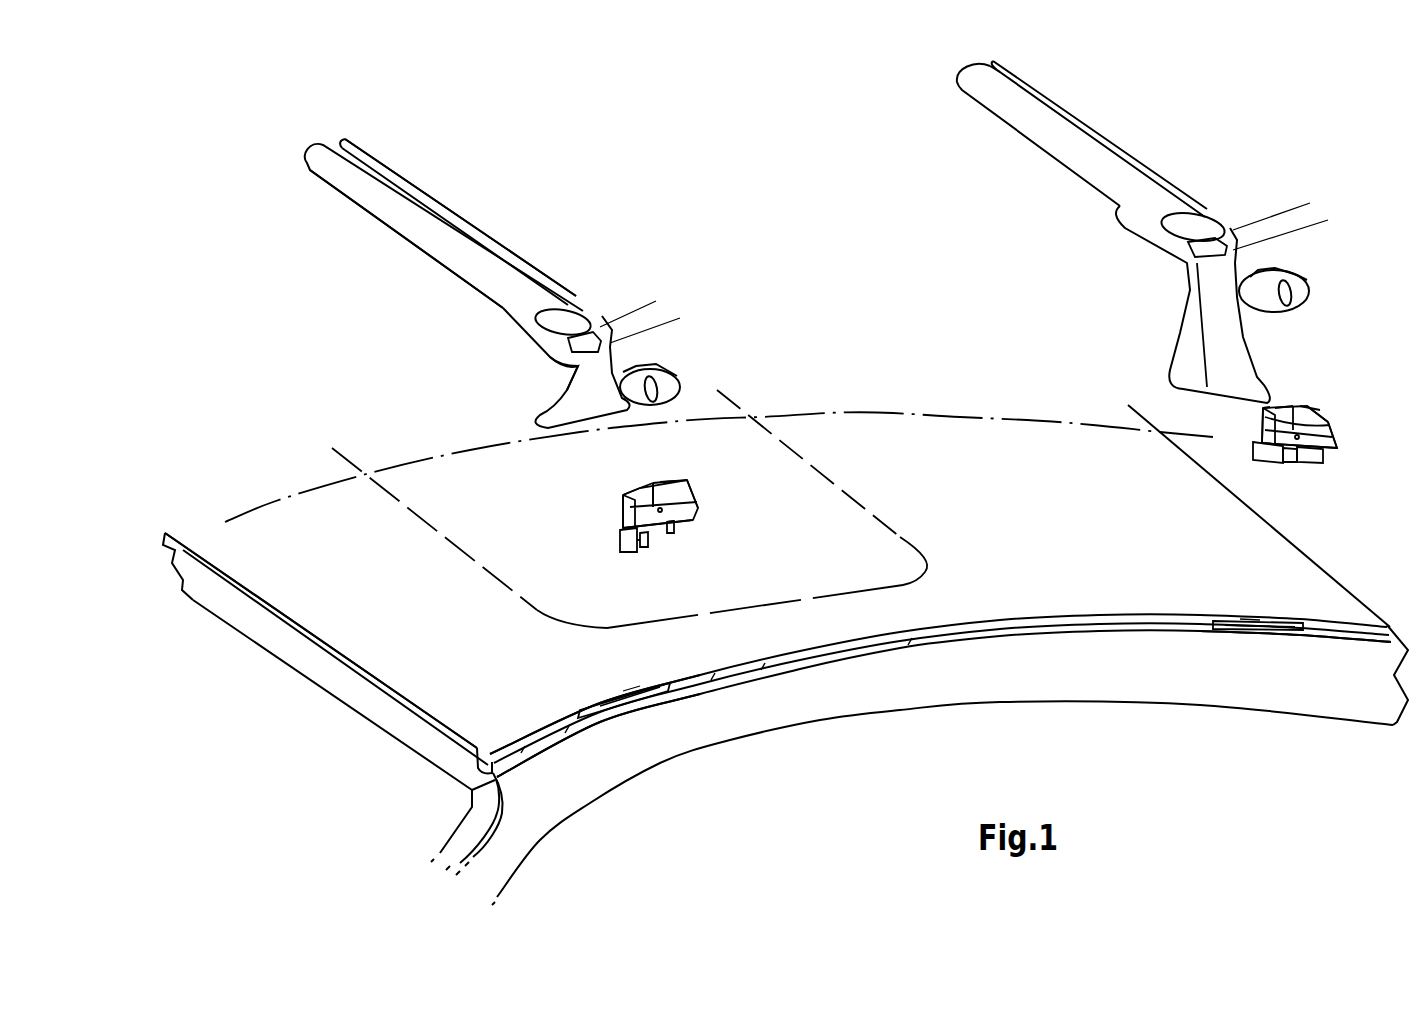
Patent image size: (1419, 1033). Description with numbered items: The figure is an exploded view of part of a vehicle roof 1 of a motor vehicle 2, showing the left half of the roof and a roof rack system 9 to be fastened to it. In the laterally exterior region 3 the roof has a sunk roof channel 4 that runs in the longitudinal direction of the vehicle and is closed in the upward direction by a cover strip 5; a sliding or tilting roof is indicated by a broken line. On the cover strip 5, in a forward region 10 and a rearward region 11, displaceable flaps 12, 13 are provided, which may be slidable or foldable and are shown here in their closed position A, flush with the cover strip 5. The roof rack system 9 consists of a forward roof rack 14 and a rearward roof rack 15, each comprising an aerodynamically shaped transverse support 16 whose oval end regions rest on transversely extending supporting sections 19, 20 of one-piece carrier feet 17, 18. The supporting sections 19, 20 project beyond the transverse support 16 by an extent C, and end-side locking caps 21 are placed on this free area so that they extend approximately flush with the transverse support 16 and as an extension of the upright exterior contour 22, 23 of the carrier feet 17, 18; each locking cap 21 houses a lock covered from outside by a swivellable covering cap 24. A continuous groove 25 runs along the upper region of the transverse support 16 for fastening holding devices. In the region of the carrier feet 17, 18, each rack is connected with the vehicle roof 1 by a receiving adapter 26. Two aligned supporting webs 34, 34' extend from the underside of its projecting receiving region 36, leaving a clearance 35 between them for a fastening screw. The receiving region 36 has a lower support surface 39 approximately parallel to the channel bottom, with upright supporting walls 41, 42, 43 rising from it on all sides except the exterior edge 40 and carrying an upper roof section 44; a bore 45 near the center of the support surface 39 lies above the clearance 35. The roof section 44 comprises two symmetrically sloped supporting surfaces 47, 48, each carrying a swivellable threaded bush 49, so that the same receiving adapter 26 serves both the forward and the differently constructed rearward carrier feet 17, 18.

The vehicle roof 1 is at (287, 520).
The motor vehicle 2 is at (229, 636).
The laterally exterior region 3 is at (500, 733).
The roof channel 4 is at (552, 737).
The cover strip 5 is at (1337, 632).
The roof rack system 9 is at (843, 236).
The forward region 10 is at (573, 690).
The rearward region 11 is at (1218, 612).
The flap 12 is at (657, 678).
The flap 13 is at (1270, 622).
The forward roof rack 14 is at (664, 193).
The rearward roof rack 15 is at (1125, 143).
The transverse support 16 is at (450, 252).
The carrier foot 17 is at (544, 336).
The carrier foot 18 is at (1187, 275).
The supporting section 19 is at (602, 326).
The supporting section 20 is at (1233, 225).
The locking cap 21 is at (1001, 319).
The upright exterior contour 22 is at (597, 373).
The upright exterior contour 23 is at (1210, 278).
The covering cap 24 is at (680, 390).
The groove 25 is at (338, 143).
The receiving adapter 26 is at (613, 542).
The supporting web 34 is at (929, 525).
The supporting web 34' is at (1031, 511).
The clearance 35 is at (658, 535).
The projecting receiving region 36 is at (971, 478).
The support surface 39 is at (680, 507).
The exterior edge 40 is at (643, 553).
The supporting wall 41 is at (653, 487).
The supporting wall 42 is at (623, 515).
The supporting wall 43 is at (687, 497).
The roof section 44 is at (642, 477).
The bore 45 is at (667, 520).
The supporting surface 47 is at (627, 490).
The supporting surface 48 is at (667, 477).
The threaded bush 49 is at (638, 482).
The closed position A is at (620, 688).
The extent C is at (693, 340).